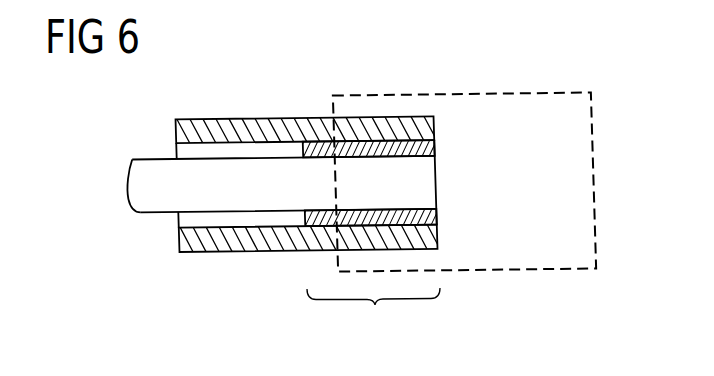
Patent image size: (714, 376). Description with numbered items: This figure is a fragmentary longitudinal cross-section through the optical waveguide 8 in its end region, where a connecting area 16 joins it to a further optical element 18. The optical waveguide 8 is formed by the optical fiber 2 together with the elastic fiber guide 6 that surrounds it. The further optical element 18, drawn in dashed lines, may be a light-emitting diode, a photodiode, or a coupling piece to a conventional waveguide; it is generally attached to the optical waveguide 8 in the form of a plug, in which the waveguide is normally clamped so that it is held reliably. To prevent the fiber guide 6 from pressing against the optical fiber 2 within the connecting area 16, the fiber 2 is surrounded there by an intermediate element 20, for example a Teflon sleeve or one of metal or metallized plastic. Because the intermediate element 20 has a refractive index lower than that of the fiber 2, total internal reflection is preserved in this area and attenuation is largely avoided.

The optical fiber 2 is at (128, 197).
The fiber guide 6 is at (178, 243).
The optical waveguide 8 is at (268, 90).
The connecting area 16 is at (373, 316).
The further optical element 18 is at (593, 178).
The intermediate element 20 is at (323, 142).